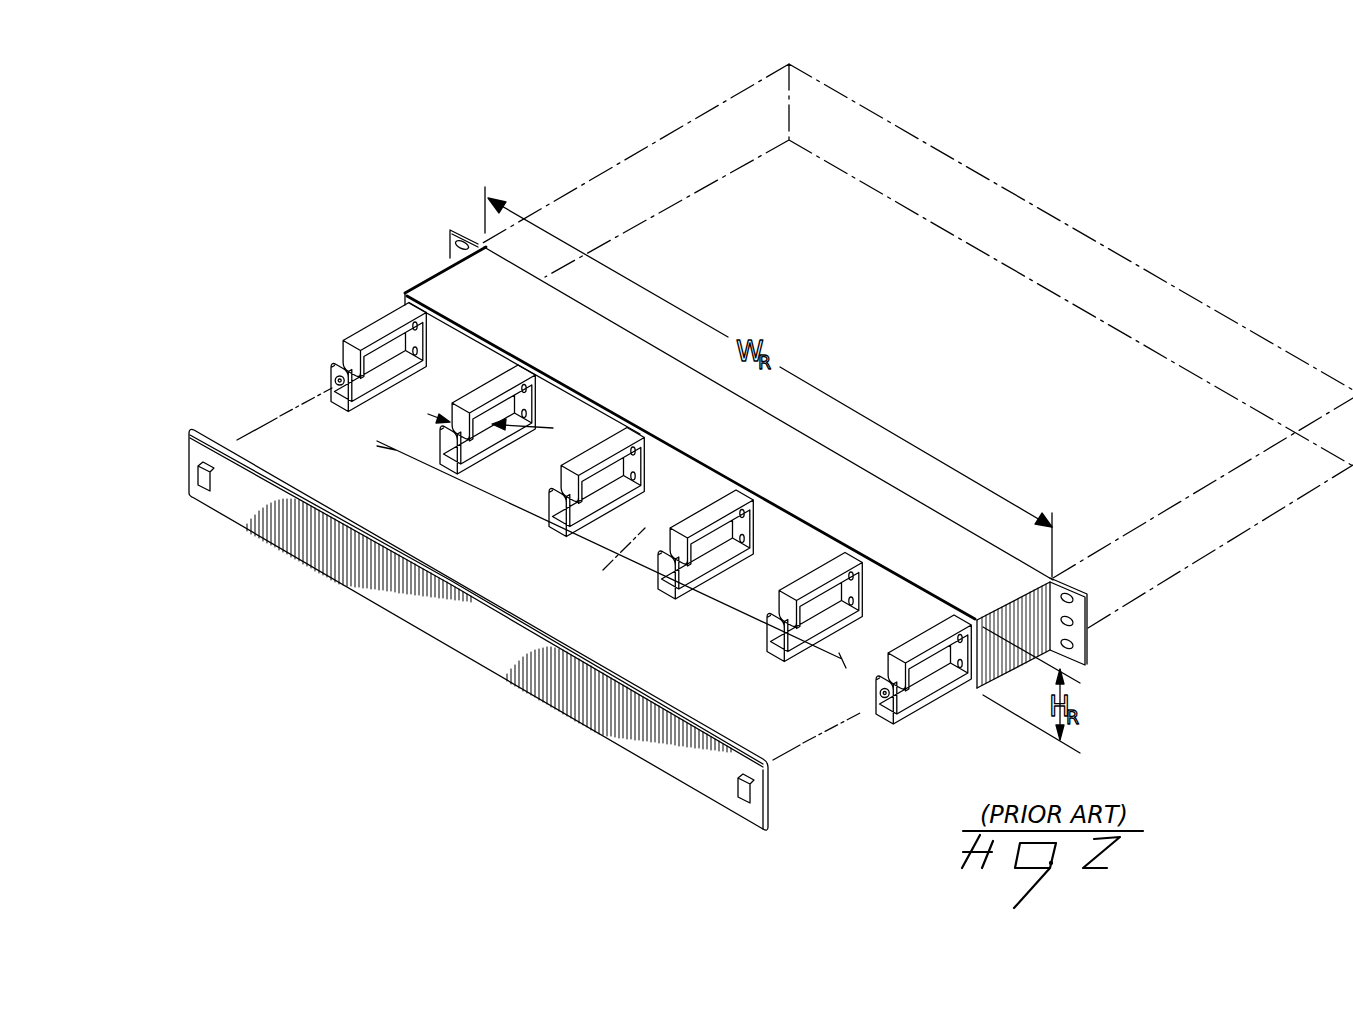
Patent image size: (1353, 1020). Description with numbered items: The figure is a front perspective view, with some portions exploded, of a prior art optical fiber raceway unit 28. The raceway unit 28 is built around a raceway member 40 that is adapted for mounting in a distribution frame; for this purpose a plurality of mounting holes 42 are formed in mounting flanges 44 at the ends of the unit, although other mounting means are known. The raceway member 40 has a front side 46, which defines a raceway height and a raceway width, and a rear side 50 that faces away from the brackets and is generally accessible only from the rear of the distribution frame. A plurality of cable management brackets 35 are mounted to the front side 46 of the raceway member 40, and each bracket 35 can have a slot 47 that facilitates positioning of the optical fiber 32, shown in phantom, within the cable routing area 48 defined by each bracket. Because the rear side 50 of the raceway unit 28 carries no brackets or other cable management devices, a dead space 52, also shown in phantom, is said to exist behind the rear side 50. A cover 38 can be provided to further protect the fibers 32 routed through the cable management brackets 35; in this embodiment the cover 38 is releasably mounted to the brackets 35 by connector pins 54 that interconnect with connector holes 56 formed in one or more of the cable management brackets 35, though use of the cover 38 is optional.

The optical fiber raceway unit 28 is at (318, 250).
The optical fiber 32 is at (627, 550).
The cable management brackets 35 is at (376, 326).
The cover 38 is at (410, 600).
The raceway member 40 is at (448, 288).
The mounting holes 42 is at (452, 236).
The mounting flanges 44 is at (450, 252).
The front side 46 is at (870, 636).
The slot 47 is at (419, 412).
The cable routing area 48 is at (539, 413).
The rear side 50 is at (958, 518).
The dead space 52 is at (1259, 527).
The connector pins 54 is at (202, 492).
The connector holes 56 is at (335, 380).